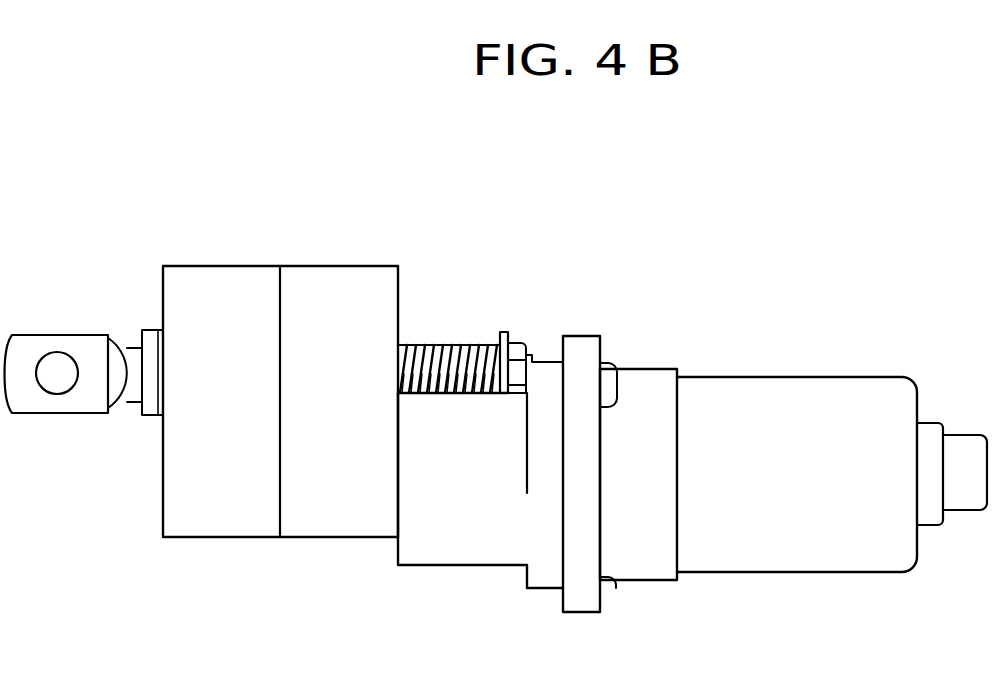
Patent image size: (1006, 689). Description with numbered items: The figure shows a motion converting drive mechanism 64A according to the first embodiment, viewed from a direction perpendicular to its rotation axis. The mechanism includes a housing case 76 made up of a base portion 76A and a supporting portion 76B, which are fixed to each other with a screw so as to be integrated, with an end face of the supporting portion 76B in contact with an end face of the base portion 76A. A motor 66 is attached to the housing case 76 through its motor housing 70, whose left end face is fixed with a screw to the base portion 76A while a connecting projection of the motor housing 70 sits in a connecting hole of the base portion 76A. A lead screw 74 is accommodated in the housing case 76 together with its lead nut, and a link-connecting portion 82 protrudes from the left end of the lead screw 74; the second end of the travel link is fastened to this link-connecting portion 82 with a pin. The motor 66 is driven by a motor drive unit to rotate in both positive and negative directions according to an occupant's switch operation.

The motion converting drive mechanism 64A is at (354, 218).
The link-connecting portion 82 is at (63, 343).
The housing case 76 is at (457, 615).
The supporting portion 76B is at (232, 517).
The base portion 76A is at (448, 550).
The lead screw 74 is at (440, 342).
The motor 66 is at (782, 337).
The motor housing 70 is at (820, 393).